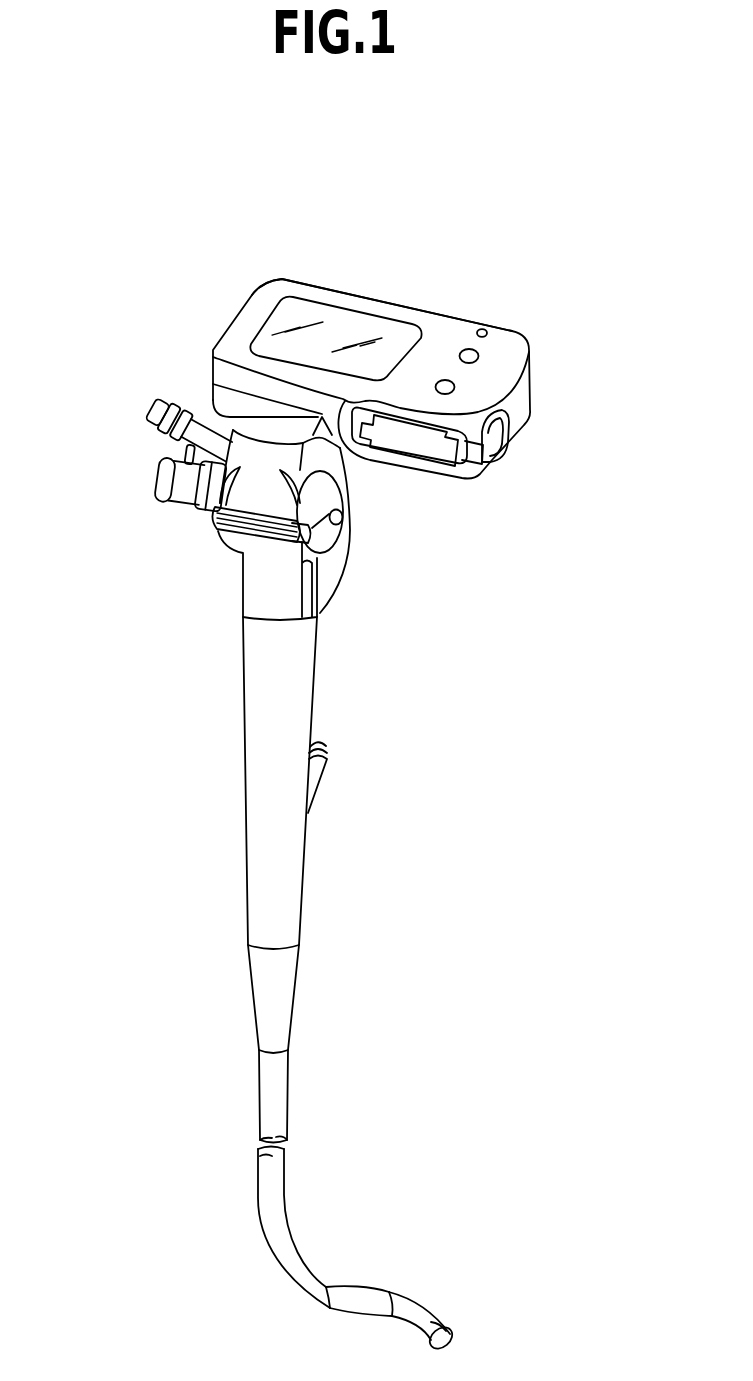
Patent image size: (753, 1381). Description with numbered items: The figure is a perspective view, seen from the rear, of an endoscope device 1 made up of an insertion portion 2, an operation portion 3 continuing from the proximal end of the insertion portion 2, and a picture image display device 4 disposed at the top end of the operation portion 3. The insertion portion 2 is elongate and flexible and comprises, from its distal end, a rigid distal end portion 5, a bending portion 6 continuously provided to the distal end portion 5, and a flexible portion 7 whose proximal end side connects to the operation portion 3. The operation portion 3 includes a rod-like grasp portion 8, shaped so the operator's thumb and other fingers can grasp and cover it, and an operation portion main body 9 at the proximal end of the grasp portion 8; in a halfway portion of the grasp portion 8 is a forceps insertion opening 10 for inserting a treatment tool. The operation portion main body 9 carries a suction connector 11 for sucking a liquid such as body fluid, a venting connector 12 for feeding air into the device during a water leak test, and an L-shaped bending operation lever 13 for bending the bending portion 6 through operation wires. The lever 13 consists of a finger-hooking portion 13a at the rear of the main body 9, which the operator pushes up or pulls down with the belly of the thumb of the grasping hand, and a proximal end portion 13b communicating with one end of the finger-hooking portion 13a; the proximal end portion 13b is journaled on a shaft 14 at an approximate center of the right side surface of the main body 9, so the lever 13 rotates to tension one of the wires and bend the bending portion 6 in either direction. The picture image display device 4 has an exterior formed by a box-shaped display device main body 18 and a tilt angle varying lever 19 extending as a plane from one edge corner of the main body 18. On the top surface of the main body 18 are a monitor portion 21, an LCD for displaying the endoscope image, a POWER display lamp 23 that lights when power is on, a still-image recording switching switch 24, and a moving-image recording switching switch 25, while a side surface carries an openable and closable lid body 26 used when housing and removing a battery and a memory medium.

The endoscope device 1 is at (458, 222).
The insertion portion 2 is at (360, 1168).
The operation portion 3 is at (431, 489).
The picture image display device 4 is at (527, 308).
The distal end portion 5 is at (436, 1322).
The bending portion 6 is at (391, 1300).
The flexible portion 7 is at (290, 1257).
The grasp portion 8 is at (377, 619).
The operation portion main body 9 is at (378, 470).
The forceps insertion opening 10 is at (323, 781).
The suction connector 11 is at (150, 424).
The venting connector 12 is at (178, 490).
The bending operation lever 13 is at (125, 586).
The finger-hooking portion 13a is at (228, 526).
The proximal end portion 13b is at (300, 557).
The shaft 14 is at (337, 526).
The display device main body 18 is at (250, 297).
The tilt angle varying lever 19 is at (227, 378).
The monitor portion 21 is at (340, 320).
The POWER display lamp 23 is at (482, 328).
The still-image recording switching switch 24 is at (473, 357).
The moving-image recording switching switch 25 is at (452, 388).
The lid body 26 is at (447, 457).